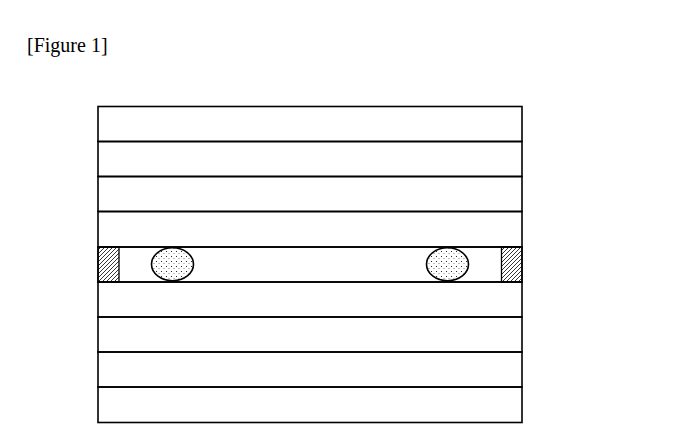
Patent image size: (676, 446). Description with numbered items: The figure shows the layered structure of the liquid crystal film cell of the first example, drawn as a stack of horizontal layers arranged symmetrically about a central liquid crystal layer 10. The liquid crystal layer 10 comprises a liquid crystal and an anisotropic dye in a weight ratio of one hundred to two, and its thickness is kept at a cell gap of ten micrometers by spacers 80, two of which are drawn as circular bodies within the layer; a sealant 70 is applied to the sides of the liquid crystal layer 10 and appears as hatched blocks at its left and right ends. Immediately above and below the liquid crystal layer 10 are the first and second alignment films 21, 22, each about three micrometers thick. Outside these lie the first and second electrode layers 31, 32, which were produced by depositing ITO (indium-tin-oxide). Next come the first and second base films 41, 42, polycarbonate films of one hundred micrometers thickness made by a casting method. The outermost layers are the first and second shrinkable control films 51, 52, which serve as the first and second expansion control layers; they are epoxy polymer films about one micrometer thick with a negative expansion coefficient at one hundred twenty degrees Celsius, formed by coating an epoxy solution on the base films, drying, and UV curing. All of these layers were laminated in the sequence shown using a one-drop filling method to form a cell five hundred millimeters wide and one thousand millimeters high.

The liquid crystal layer 10 is at (493, 256).
The first alignment film 21 is at (512, 228).
The second alignment film 22 is at (512, 304).
The first electrode layer 31 is at (512, 195).
The second electrode layer 32 is at (512, 340).
The first base film 41 is at (512, 162).
The second base film 42 is at (512, 370).
The first shrinkable control film 51 is at (512, 127).
The second shrinkable control film 52 is at (512, 405).
The sealant 70 is at (108, 262).
The spacer 80 is at (191, 262).